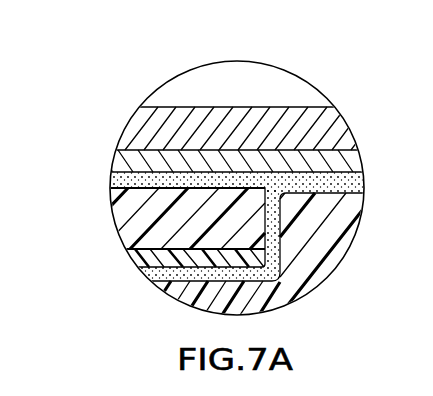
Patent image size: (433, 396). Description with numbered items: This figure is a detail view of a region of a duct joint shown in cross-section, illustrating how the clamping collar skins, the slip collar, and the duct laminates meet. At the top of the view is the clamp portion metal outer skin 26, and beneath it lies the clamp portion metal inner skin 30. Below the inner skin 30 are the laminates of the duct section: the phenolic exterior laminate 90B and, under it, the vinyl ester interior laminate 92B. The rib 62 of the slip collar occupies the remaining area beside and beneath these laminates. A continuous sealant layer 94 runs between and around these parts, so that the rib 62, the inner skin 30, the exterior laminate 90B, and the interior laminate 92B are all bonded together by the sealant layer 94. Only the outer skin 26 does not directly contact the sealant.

The clamp portion metal outer skin 26 is at (197, 99).
The clamp portion metal inner skin 30 is at (108, 159).
The rib 62 is at (349, 214).
The phenolic exterior laminate 90B is at (109, 215).
The vinyl ester interior laminate 92B is at (127, 263).
The continuous sealant layer 94 is at (281, 248).